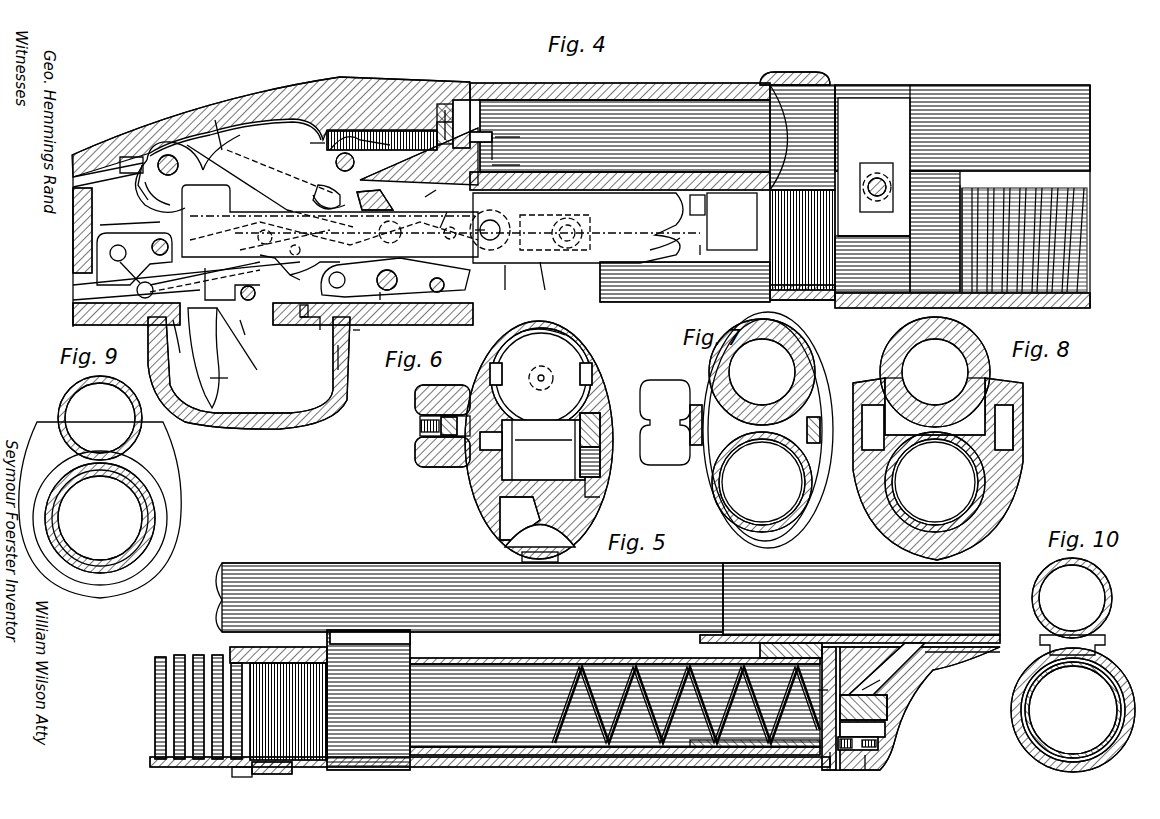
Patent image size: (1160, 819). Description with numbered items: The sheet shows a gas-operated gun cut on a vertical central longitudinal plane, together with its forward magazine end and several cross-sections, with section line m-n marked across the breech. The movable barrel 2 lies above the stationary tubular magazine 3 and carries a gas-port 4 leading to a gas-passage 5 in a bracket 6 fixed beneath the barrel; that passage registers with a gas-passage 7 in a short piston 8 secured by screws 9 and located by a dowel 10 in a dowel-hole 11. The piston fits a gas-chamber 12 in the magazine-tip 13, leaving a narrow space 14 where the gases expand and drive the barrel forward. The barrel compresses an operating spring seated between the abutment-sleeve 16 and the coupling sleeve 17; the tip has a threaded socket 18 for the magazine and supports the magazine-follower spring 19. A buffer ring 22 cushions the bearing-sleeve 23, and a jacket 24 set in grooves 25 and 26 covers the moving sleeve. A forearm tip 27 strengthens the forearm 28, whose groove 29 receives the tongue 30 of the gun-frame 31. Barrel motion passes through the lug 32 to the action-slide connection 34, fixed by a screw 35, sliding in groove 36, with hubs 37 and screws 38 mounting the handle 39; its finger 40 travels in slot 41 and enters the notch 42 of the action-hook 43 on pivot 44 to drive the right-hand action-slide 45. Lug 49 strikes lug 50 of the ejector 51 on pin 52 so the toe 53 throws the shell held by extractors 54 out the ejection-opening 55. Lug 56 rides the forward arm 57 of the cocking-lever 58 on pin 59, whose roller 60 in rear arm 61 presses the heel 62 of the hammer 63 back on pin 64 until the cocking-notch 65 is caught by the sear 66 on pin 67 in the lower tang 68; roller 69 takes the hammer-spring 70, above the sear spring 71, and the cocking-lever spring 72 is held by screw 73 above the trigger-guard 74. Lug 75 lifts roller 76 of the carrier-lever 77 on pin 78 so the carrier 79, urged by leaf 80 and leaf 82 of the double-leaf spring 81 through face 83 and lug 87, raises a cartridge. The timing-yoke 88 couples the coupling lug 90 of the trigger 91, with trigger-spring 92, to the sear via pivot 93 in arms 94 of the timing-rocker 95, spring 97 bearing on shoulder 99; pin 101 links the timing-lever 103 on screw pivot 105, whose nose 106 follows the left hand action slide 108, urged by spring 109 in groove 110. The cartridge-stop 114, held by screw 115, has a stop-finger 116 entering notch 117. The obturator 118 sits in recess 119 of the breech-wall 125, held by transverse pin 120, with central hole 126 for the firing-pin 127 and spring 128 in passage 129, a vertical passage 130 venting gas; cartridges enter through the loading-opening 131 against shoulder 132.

In FIG. 4, the movable barrel 2 is at (962, 196).
In FIG. 9, the movable barrel 2 is at (112, 390).
In FIG. 7, the movable barrel 2 is at (770, 348).
In FIG. 8, the movable barrel 2 is at (950, 356).
In FIG. 10, the movable barrel 2 is at (1098, 577).
In FIG. 5, the movable barrel 2 is at (838, 575).
In FIG. 4, the stationary tubular magazine 3 is at (835, 220).
In FIG. 9, the stationary tubular magazine 3 is at (135, 494).
In FIG. 7, the stationary tubular magazine 3 is at (775, 472).
In FIG. 8, the stationary tubular magazine 3 is at (952, 472).
In FIG. 10, the stationary tubular magazine 3 is at (1032, 693).
In FIG. 5, the stationary tubular magazine 3 is at (240, 684).
In FIG. 5, the gas-port 4 is at (932, 650).
In FIG. 5, the gas-passage 5 is at (913, 645).
In FIG. 5, the bracket 6 is at (922, 678).
In FIG. 5, the gas-passage 7 is at (864, 687).
In FIG. 5, the short piston 8 is at (893, 732).
In FIG. 5, the screws 9 is at (878, 745).
In FIG. 5, the dowel 10 is at (890, 712).
In FIG. 5, the dowel-hole 11 is at (900, 720).
In FIG. 5, the gas-chamber 12 is at (845, 772).
In FIG. 5, the magazine-tip 13 is at (867, 772).
In FIG. 5, the narrow space 14 is at (817, 704).
In FIG. 9, the operating spring-abutment-sleeve 16 is at (155, 503).
In FIG. 5, the operating spring-abutment-sleeve 16 is at (276, 645).
In FIG. 4, the coupling sleeve 17 is at (935, 231).
In FIG. 8, the coupling sleeve 17 is at (990, 427).
In FIG. 5, the threaded socket 18 is at (790, 755).
In FIG. 5, the magazine-follower spring 19 is at (655, 750).
In FIG. 5, the buffer ring 22 is at (737, 768).
In FIG. 10, the bearing-sleeve 23 is at (1072, 645).
In FIG. 5, the bearing-sleeve 23 is at (368, 700).
In FIG. 10, the tubular sheet-metal jacket 24 is at (1012, 698).
In FIG. 5, the tubular sheet-metal jacket 24 is at (560, 760).
In FIG. 5, the annular groove 25 is at (827, 772).
In FIG. 5, the annular groove 26 is at (285, 774).
In FIG. 5, the forearm tip 27 is at (242, 777).
In FIG. 4, the forearm 28 is at (1060, 308).
In FIG. 9, the forearm 28 is at (180, 470).
In FIG. 8, the forearm 28 is at (1023, 468).
In FIG. 5, the forearm 28 is at (205, 768).
In FIG. 4, the annular groove 29 is at (852, 308).
In FIG. 4, the tongue 30 is at (842, 290).
In FIG. 4, the gun-frame 31 is at (802, 310).
In FIG. 7, the gun-frame 31 is at (826, 490).
In FIG. 4, the lug 32 is at (868, 165).
In FIG. 8, the lug 32 is at (871, 427).
In FIG. 6, the action-slide connection 34 is at (415, 458).
In FIG. 7, the action-slide connection 34 is at (702, 428).
In FIG. 4, the screw 35 is at (866, 188).
In FIG. 6, the longitudinal groove 36 is at (535, 388).
In FIG. 6, the hubs 37 is at (453, 426).
In FIG. 6, the screws 38 is at (420, 430).
In FIG. 6, the handle 39 is at (415, 400).
In FIG. 7, the handle 39 is at (665, 422).
In FIG. 4, the finger 40 is at (382, 200).
In FIG. 6, the finger 40 is at (543, 450).
In FIG. 6, the slot 41 is at (491, 441).
In FIG. 4, the notch 42 is at (586, 227).
In FIG. 4, the action-hook 43 is at (552, 222).
In FIG. 4, the pivot 44 is at (490, 227).
In FIG. 4, the right-hand action-slide 45 is at (450, 208).
In FIG. 6, the right-hand action-slide 45 is at (543, 456).
In FIG. 4, the lug 49 is at (330, 221).
In FIG. 4, the lug 50 is at (329, 196).
In FIG. 4, the ejector 51 is at (419, 156).
In FIG. 4, the pin 52 is at (335, 162).
In FIG. 4, the toe 53 is at (477, 217).
In FIG. 4, the extractors 54 is at (510, 130).
In FIG. 6, the extractors 54 is at (582, 376).
In FIG. 4, the ejection-opening 55 is at (650, 81).
In FIG. 6, the ejection-opening 55 is at (573, 342).
In FIG. 4, the lug 56 is at (316, 198).
In FIG. 4, the forward arm 57 is at (440, 275).
In FIG. 4, the cocking-lever 58 is at (395, 290).
In FIG. 4, the pin 59 is at (384, 293).
In FIG. 4, the antifriction roller 60 is at (303, 330).
In FIG. 4, the rear arm 61 is at (395, 277).
In FIG. 4, the heel 62 is at (340, 265).
In FIG. 4, the hammer 63 is at (237, 152).
In FIG. 4, the pin 64 is at (276, 267).
In FIG. 4, the cocking-notch 65 is at (315, 268).
In FIG. 4, the sear 66 is at (222, 290).
In FIG. 4, the pin 67 is at (250, 333).
In FIG. 4, the lower tang 68 is at (333, 360).
In FIG. 6, the lower tang 68 is at (540, 552).
In FIG. 4, the antifriction roller 69 is at (334, 235).
In FIG. 4, the hammer-spring 70 is at (223, 281).
In FIG. 4, the sear spring 71 is at (125, 325).
In FIG. 4, the cocking-lever spring 72 is at (364, 341).
In FIG. 4, the screw 73 is at (300, 312).
In FIG. 4, the trigger-guard 74 is at (262, 430).
In FIG. 4, the lug 75 is at (130, 216).
In FIG. 4, the antifriction roller 76 is at (280, 173).
In FIG. 4, the carrier-lever 77 is at (270, 186).
In FIG. 4, the pin 78 is at (168, 155).
In FIG. 4, the pivotal cartridge-carrier 79 is at (220, 118).
In FIG. 6, the pivotal cartridge-carrier 79 is at (517, 512).
In FIG. 4, the leaf 80 is at (131, 165).
In FIG. 4, the double-leaf spring 81 is at (108, 174).
In FIG. 4, the leaf 82 is at (106, 187).
In FIG. 4, the lower face 83 is at (157, 193).
In FIG. 4, the lug 87 is at (142, 160).
In FIG. 4, the timing-yoke 88 is at (180, 344).
In FIG. 4, the coupling lug 90 is at (212, 358).
In FIG. 4, the trigger 91 is at (224, 385).
In FIG. 4, the trigger-spring 92 is at (242, 350).
In FIG. 4, the pivot 93 is at (95, 290).
In FIG. 4, the arms 94 is at (136, 280).
In FIG. 4, the timing-rocker 95 is at (126, 251).
In FIG. 4, the coiled spring 97 is at (151, 254).
In FIG. 4, the shoulder 99 is at (205, 277).
In FIG. 4, the pin 101 is at (118, 243).
In FIG. 4, the timing-lever 103 is at (73, 242).
In FIG. 6, the timing-lever 103 is at (602, 462).
In FIG. 4, the screw pivot 105 is at (336, 229).
In FIG. 4, the nose 106 is at (680, 200).
In FIG. 4, the left hand action slide 108 is at (640, 190).
In FIG. 6, the left hand action slide 108 is at (602, 428).
In FIG. 7, the left hand action slide 108 is at (818, 420).
In FIG. 8, the left hand action slide 108 is at (1014, 427).
In FIG. 4, the spring 109 is at (675, 237).
In FIG. 6, the spring 109 is at (600, 488).
In FIG. 6, the groove 110 is at (600, 398).
In FIG. 4, the cartridge-stop 114 is at (706, 245).
In FIG. 4, the screw 115 is at (548, 276).
In FIG. 4, the stop-finger 116 is at (722, 232).
In FIG. 4, the notch 117 is at (745, 190).
In FIG. 4, the obturator 118 is at (478, 128).
In FIG. 6, the obturator 118 is at (522, 361).
In FIG. 4, the recess 119 is at (443, 108).
In FIG. 4, the transverse pin 120 is at (425, 188).
In FIG. 4, the breech-wall 125 is at (362, 90).
In FIG. 6, the breech-wall 125 is at (574, 340).
In FIG. 4, the central hole 126 is at (511, 154).
In FIG. 4, the firing-pin 127 is at (459, 222).
In FIG. 6, the firing-pin 127 is at (548, 385).
In FIG. 4, the spring 128 is at (380, 128).
In FIG. 4, the passage 129 is at (440, 108).
In FIG. 4, the vertical passage 130 is at (458, 100).
In FIG. 4, the loading-opening 131 is at (660, 300).
In FIG. 4, the shoulder 132 is at (516, 277).
In FIG. 4, the section line m-n m is at (311, 142).
In FIG. 4, the section line m- n is at (501, 144).